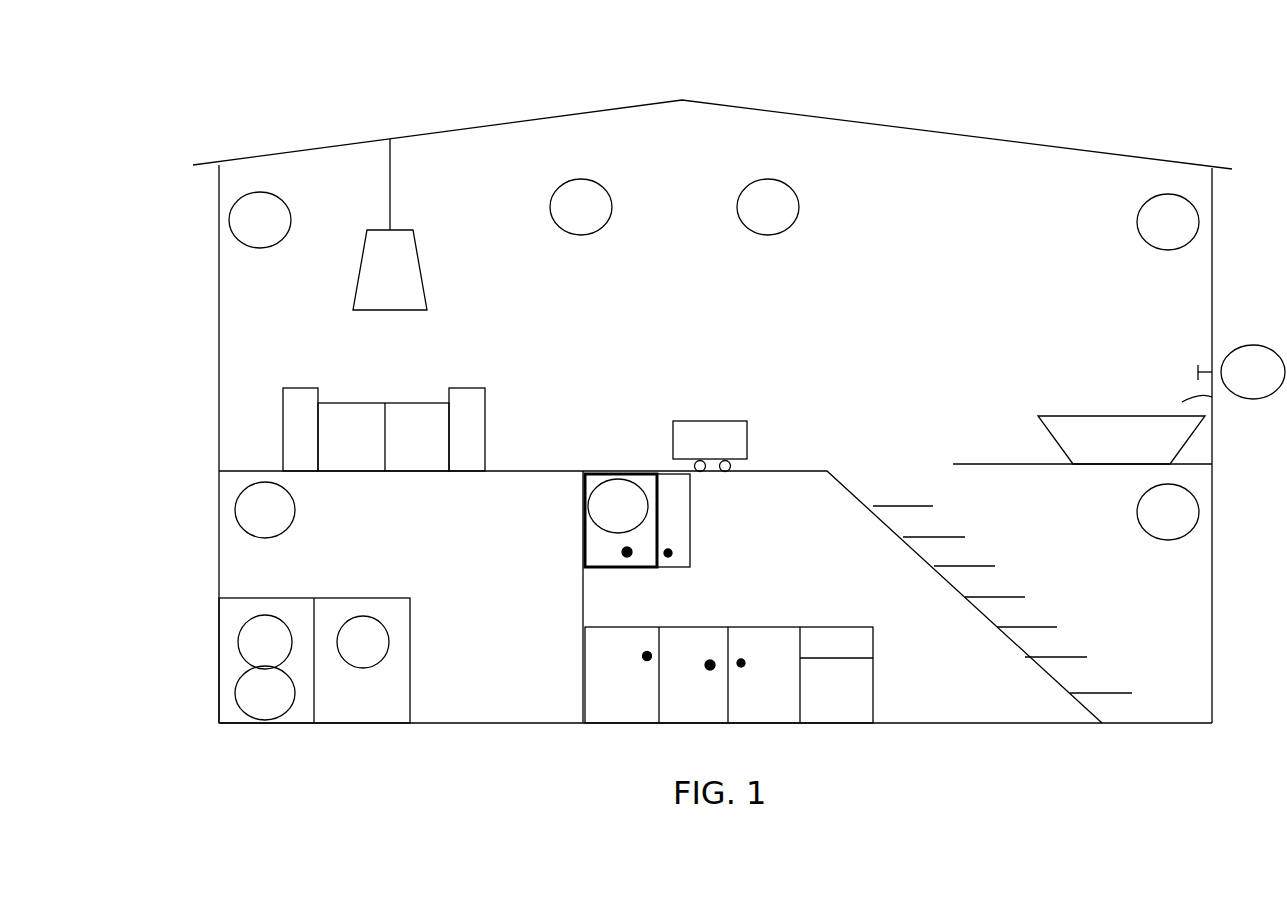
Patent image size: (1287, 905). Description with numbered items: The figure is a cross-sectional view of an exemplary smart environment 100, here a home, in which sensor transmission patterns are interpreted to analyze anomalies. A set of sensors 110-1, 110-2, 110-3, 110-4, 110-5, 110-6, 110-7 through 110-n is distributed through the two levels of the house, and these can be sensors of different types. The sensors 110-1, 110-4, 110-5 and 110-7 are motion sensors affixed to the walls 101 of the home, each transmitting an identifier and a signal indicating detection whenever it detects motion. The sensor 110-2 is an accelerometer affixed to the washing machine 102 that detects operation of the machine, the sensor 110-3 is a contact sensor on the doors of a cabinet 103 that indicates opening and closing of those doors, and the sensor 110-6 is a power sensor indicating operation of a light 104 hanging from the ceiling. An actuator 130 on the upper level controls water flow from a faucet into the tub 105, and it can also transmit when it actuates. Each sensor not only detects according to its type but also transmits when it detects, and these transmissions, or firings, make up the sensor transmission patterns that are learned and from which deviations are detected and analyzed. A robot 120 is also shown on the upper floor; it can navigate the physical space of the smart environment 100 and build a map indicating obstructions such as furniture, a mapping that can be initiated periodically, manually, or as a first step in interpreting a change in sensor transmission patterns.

The smart environment 100 is at (115, 147).
The walls 101 is at (243, 268).
The washing machine 102 is at (250, 598).
The cabinet 103 is at (682, 525).
The light 104 is at (420, 272).
The tub 105 is at (1050, 437).
The robot 120 is at (710, 446).
The actuator 130 is at (1207, 372).
The sensor 110-1 is at (265, 510).
The sensor 110-2 is at (265, 693).
The sensor 110-3 is at (618, 506).
The sensor 110-4 is at (1168, 512).
The sensor 110-5 is at (260, 220).
The sensor 110-6 is at (581, 207).
The sensor 110-7 is at (768, 207).
The sensor 110-n is at (1168, 222).